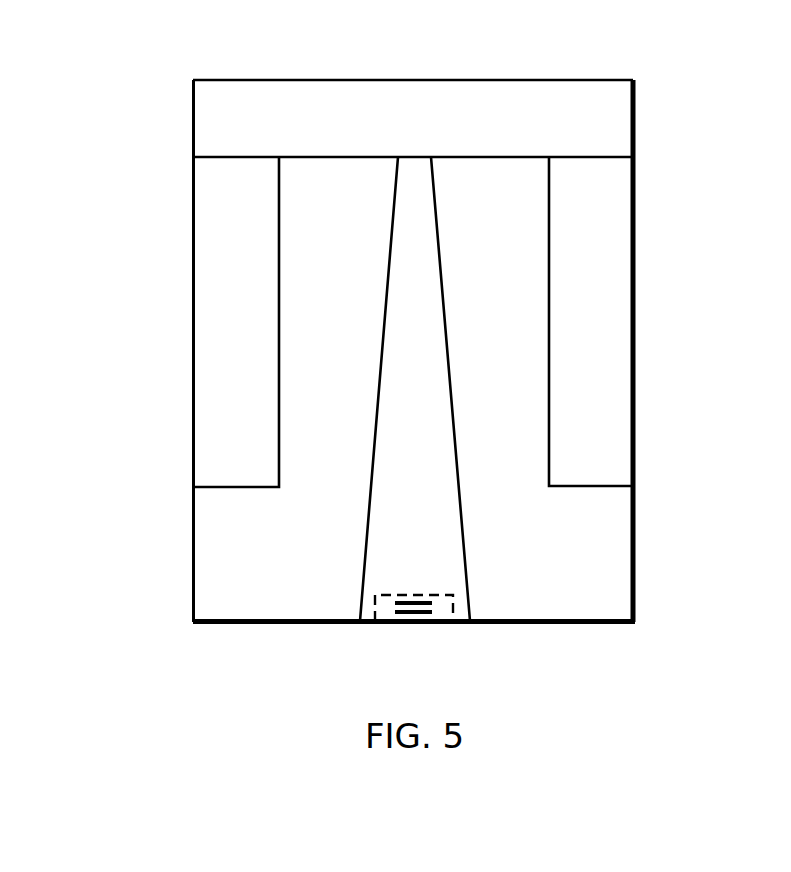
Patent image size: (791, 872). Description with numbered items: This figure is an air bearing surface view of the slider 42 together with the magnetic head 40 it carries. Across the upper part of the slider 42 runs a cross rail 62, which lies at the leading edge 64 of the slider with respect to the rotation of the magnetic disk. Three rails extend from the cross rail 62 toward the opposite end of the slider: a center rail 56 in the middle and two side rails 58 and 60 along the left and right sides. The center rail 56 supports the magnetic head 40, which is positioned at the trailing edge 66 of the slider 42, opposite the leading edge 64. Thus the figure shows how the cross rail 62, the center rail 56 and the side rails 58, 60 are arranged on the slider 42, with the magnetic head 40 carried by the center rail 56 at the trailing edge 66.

The magnetic head 40 is at (387, 628).
The slider 42 is at (170, 569).
The center rail 56 is at (402, 266).
The side rail 58 is at (208, 228).
The side rail 60 is at (608, 228).
The cross rail 62 is at (327, 88).
The leading edge 64 is at (482, 80).
The trailing edge 66 is at (532, 624).